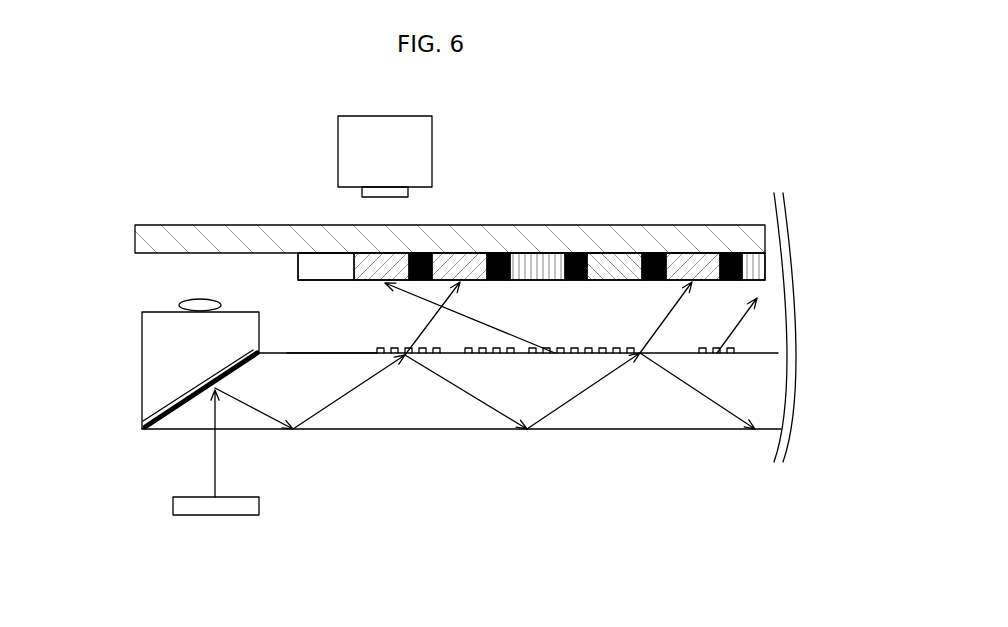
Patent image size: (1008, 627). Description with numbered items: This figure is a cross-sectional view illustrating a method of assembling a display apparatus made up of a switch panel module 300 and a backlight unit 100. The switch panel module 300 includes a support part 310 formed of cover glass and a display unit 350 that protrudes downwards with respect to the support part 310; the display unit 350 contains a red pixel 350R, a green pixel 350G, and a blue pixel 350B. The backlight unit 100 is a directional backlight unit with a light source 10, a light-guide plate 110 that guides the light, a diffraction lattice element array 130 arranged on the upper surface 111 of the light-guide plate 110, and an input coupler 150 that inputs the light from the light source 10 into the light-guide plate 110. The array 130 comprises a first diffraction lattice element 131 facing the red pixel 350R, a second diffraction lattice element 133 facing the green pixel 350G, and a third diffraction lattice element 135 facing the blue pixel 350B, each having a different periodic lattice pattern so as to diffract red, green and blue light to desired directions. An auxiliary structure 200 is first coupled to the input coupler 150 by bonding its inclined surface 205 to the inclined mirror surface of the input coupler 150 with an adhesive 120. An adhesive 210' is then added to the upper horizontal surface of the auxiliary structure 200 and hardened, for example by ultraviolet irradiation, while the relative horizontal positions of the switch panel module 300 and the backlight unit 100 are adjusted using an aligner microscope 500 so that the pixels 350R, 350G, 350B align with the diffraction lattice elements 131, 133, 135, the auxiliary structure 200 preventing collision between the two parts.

The light source 10 is at (233, 515).
The backlight unit 100 is at (514, 430).
The light-guide plate 110 is at (770, 392).
The upper surface 111 is at (287, 355).
The adhesive 120 is at (203, 383).
The diffraction lattice element array 130 is at (555, 435).
The first diffraction lattice element 131 is at (560, 353).
The second diffraction lattice element 133 is at (415, 358).
The third diffraction lattice element 135 is at (480, 358).
The input coupler 150 is at (157, 422).
The auxiliary structure 200 is at (158, 381).
The inclined surface 205 is at (165, 401).
The adhesive 210' is at (159, 289).
The switch panel module 300 is at (447, 225).
The support part 310 is at (762, 240).
The display unit 350 is at (586, 225).
The green pixel 350G is at (462, 258).
The blue pixel 350B is at (540, 258).
The red pixel 350R is at (617, 258).
The aligner microscope 500 is at (343, 150).